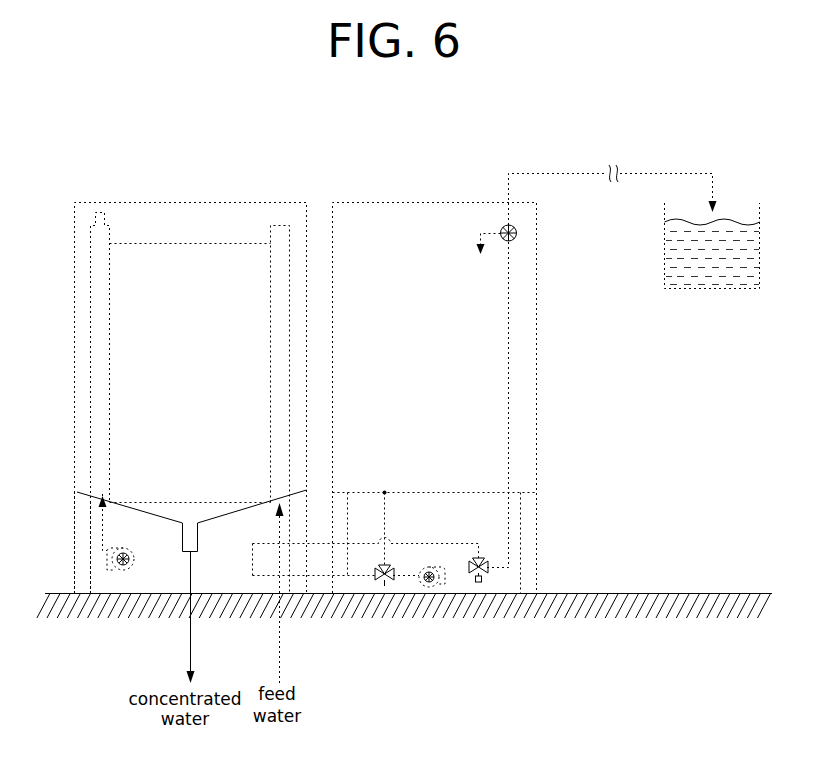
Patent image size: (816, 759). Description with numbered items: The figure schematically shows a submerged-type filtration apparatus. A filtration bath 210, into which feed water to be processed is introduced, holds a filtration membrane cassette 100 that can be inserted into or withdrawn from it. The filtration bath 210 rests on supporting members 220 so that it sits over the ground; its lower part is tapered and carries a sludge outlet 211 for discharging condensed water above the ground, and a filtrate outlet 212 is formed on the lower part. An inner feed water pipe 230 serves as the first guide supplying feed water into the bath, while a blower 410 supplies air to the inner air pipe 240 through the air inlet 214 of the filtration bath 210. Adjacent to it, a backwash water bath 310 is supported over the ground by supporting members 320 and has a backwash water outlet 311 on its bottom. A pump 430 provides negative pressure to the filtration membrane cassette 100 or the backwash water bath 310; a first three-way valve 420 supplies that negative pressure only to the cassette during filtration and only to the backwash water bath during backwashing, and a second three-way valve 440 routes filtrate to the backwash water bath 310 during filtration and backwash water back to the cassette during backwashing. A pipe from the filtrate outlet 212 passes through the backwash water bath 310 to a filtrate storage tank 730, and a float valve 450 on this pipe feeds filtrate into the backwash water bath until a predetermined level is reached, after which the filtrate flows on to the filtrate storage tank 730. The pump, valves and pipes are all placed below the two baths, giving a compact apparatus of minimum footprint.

The filtration membrane cassette 100 is at (208, 243).
The filtration bath 210 is at (187, 202).
The sludge outlet 211 is at (182, 538).
The filtrate outlet 212 is at (255, 503).
The air inlet 214 is at (101, 494).
The supporting members 220 is at (82, 565).
The inner feed water pipe 230 is at (280, 230).
The inner air pipe 240 is at (102, 236).
The backwash water bath 310 is at (432, 202).
The backwash water outlet 311 is at (384, 492).
The supporting members 320 is at (528, 557).
The blower 410 is at (123, 570).
The first 3-way valve 420 is at (384, 587).
The pump 430 is at (429, 587).
The second 3-way valve 440 is at (478, 582).
The float valve 450 is at (518, 232).
The filtrate storage tank 730 is at (712, 290).